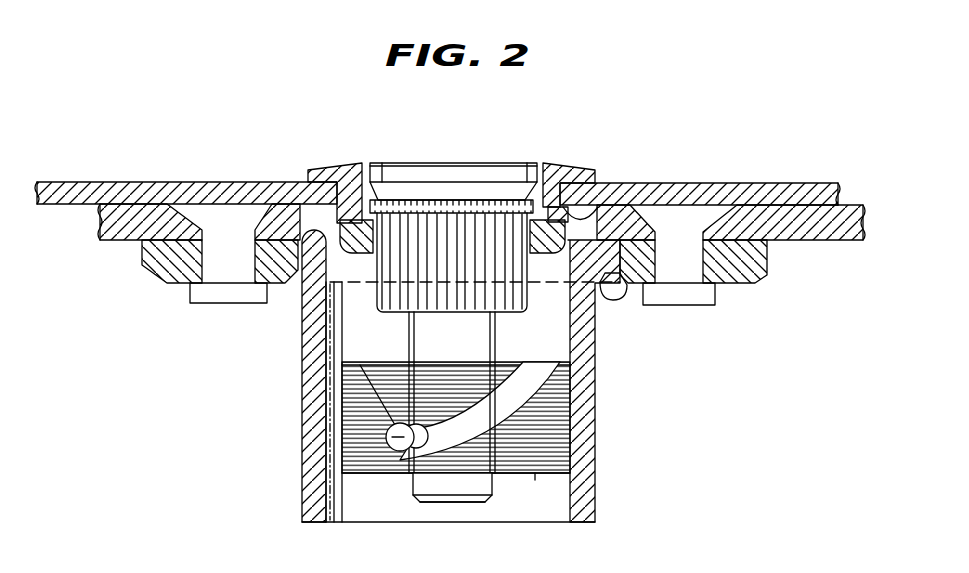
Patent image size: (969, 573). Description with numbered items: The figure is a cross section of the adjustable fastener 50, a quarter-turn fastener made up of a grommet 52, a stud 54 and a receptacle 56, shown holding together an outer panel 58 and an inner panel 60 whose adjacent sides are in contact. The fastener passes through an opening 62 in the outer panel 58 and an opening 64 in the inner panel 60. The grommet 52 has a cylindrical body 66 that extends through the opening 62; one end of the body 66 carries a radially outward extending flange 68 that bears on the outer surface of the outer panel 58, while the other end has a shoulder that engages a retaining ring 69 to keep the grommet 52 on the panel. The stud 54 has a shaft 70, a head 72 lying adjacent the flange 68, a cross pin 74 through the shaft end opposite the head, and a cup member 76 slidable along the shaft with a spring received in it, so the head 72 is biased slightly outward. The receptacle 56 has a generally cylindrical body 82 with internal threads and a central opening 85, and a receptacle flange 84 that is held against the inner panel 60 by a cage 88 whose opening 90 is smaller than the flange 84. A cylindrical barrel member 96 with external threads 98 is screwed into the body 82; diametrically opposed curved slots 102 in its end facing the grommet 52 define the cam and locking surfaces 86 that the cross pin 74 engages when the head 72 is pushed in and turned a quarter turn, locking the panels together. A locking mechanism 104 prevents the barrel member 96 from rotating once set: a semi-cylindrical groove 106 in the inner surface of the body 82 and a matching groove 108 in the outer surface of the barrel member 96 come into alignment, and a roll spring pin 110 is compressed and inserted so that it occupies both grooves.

The adjustable fastener 50 is at (357, 124).
The grommet 52 is at (549, 161).
The stud 54 is at (463, 503).
The receptacle 56 is at (300, 405).
The outer panel 58 is at (110, 180).
The inner panel 60 is at (113, 242).
The opening in outer panel 62 is at (373, 165).
The opening in inner panel 64 is at (302, 300).
The cylindrical body of grommet 66 is at (536, 165).
The radially outward extending flange 68 is at (326, 165).
The retaining ring 69 is at (600, 214).
The shaft 70 is at (412, 482).
The head 72 is at (433, 170).
The cross pin 74 is at (388, 437).
The cup member 76 is at (388, 314).
The receptacle body 82 is at (582, 405).
The receptacle flange 84 is at (616, 300).
The central opening 85 is at (576, 482).
The cam and locking surfaces 86 is at (540, 370).
The cage 88 is at (745, 268).
The opening of cage 90 is at (702, 306).
The barrel member 96 is at (535, 475).
The external threads 98 is at (576, 442).
The curved slots 102 is at (550, 364).
The locking mechanism 104 is at (328, 527).
The groove in receptacle body 106 is at (330, 478).
The groove in barrel member 108 is at (336, 523).
The roll spring pin 110 is at (330, 498).